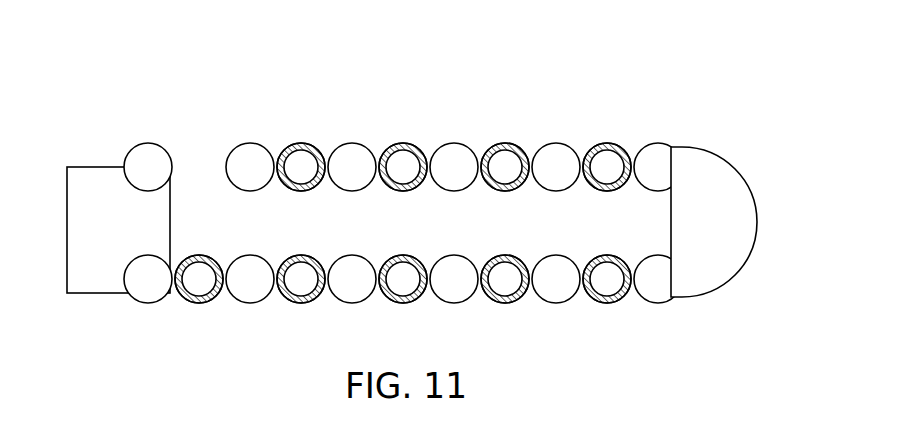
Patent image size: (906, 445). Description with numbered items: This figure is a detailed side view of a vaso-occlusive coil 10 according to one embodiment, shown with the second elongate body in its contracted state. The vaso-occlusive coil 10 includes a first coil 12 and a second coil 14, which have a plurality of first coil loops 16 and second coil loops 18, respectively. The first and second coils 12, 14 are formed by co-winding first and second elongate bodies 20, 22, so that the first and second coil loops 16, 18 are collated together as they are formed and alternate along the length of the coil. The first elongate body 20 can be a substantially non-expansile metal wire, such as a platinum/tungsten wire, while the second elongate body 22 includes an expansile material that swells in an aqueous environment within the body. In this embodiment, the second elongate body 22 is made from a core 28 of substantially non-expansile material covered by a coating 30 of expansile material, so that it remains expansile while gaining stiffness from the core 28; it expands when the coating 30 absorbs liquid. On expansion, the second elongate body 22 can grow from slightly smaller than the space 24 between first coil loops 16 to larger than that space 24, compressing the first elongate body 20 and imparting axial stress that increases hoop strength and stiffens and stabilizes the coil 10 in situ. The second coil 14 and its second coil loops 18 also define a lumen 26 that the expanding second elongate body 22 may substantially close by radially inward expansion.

The vaso-occlusive coil 10 is at (348, 33).
The first coil 12 is at (152, 142).
The second coil 14 is at (607, 142).
The first coil loops 16 is at (226, 138).
The second coil loops 18 is at (481, 138).
The first elongate body 20 is at (353, 157).
The second elongate body 22 is at (405, 142).
The space 24 is at (482, 255).
The lumen 26 is at (310, 217).
The core 28 is at (510, 282).
The coating 30 is at (607, 284).